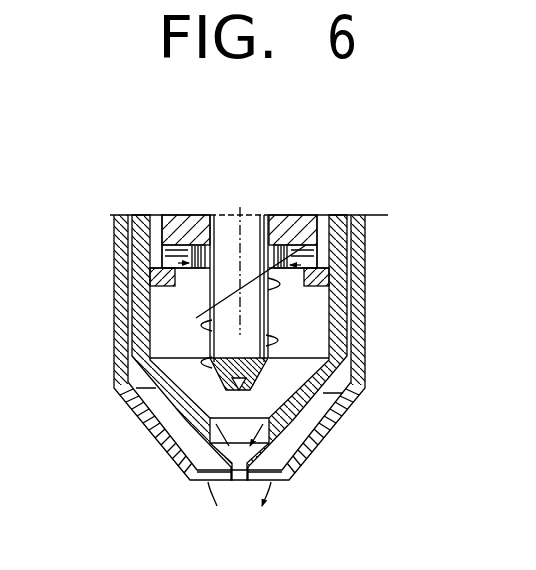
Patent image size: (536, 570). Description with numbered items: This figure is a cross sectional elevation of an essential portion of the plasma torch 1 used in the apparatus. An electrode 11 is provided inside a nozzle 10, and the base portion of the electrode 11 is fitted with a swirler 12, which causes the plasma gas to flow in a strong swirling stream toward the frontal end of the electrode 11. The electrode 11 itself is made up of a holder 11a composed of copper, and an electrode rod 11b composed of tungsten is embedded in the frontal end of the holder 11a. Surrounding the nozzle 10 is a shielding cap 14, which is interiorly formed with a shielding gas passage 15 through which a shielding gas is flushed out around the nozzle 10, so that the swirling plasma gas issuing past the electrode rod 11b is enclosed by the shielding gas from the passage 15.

The plasma torch 1 is at (109, 300).
The nozzle 10 is at (346, 278).
The electrode 11 is at (290, 337).
The holder 11a is at (270, 318).
The electrode rod 11b is at (248, 394).
The swirler 12 is at (307, 243).
The shielding cap 14 is at (366, 300).
The shielding gas passage 15 is at (310, 418).